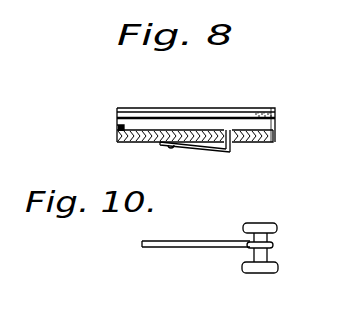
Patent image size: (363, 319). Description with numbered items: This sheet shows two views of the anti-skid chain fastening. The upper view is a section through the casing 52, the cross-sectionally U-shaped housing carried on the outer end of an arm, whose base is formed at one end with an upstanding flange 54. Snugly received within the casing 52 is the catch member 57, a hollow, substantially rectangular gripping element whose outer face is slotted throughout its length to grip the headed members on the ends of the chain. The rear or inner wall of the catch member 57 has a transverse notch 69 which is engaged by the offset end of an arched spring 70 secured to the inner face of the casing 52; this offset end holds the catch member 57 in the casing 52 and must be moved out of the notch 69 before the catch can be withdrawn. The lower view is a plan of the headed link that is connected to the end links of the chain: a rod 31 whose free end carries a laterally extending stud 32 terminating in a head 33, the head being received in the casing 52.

In FIG. 8, the casing 52 is at (270, 110).
In FIG. 8, the upstanding flange 54 is at (116, 128).
In FIG. 8, the catch member 57 is at (183, 130).
In FIG. 8, the transverse notch 69 is at (229, 130).
In FIG. 8, the arched spring 70 is at (229, 152).
In FIG. 10, the rod 31 is at (192, 248).
In FIG. 10, the stud 32 is at (274, 237).
In FIG. 10, the head 33 is at (273, 222).